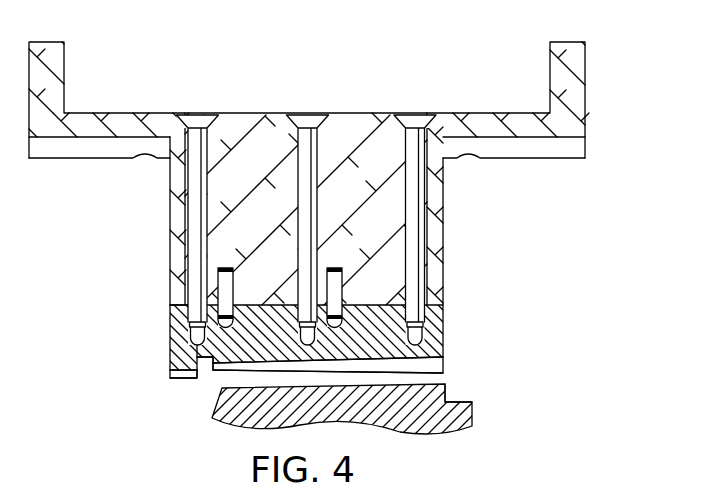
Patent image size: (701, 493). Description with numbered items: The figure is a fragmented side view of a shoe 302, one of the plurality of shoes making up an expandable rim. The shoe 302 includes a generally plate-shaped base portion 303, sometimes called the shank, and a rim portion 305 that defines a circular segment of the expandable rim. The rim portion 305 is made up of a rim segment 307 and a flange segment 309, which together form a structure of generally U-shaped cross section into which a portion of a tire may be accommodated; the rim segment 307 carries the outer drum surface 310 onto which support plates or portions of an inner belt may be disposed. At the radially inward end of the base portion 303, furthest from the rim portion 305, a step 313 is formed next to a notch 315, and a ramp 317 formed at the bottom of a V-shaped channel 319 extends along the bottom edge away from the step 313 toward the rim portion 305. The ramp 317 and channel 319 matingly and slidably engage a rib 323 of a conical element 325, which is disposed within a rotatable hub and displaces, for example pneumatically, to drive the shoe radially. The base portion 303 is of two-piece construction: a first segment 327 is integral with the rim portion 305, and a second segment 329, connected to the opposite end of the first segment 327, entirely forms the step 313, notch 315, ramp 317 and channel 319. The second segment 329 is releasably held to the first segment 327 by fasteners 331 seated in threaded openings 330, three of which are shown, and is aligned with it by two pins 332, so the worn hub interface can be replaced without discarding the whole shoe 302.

The shoe 302 is at (355, 105).
The base portion 303 is at (318, 281).
The rim portion 305 is at (349, 113).
The rim segment 307 is at (133, 120).
The flange segment 309 is at (47, 58).
The outer drum surface 310 is at (345, 125).
The step 313 is at (180, 358).
The notch 315 is at (208, 365).
The ramp 317 is at (388, 345).
The V-shaped channel 319 is at (455, 358).
The rib 323 is at (470, 402).
The conical element 325 is at (360, 401).
The first segment 327 is at (440, 181).
The second segment 329 is at (180, 332).
The threaded openings 330 is at (304, 93).
The fasteners 331 is at (197, 137).
The pins 332 is at (221, 285).